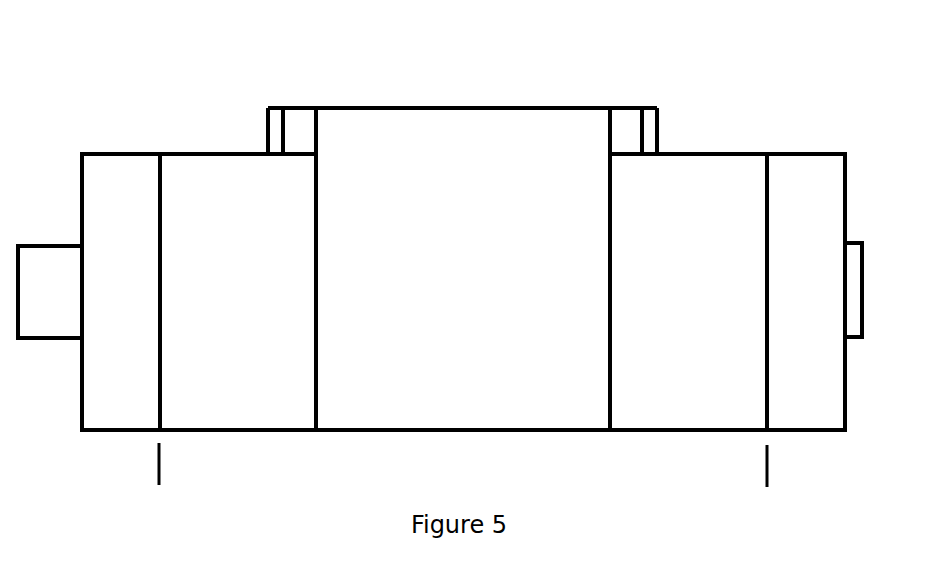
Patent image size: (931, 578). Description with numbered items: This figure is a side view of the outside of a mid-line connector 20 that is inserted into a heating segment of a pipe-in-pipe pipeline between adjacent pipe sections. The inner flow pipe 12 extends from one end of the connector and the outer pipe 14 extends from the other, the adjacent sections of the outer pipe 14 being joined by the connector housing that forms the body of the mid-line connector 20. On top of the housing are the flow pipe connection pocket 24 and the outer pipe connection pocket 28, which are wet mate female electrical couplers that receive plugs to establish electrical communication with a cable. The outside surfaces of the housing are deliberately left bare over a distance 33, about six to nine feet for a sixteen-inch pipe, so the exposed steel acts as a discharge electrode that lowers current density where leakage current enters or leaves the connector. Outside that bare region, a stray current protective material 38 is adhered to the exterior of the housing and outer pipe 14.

The flow pipe 12 is at (41, 230).
The outer pipe 14 is at (798, 137).
The mid-line connector 20 is at (430, 84).
The flow pipe connection pocket 24 is at (636, 91).
The outer pipe connection pocket 28 is at (280, 94).
The distance 33 is at (753, 469).
The stray current protective material 38 is at (131, 195).